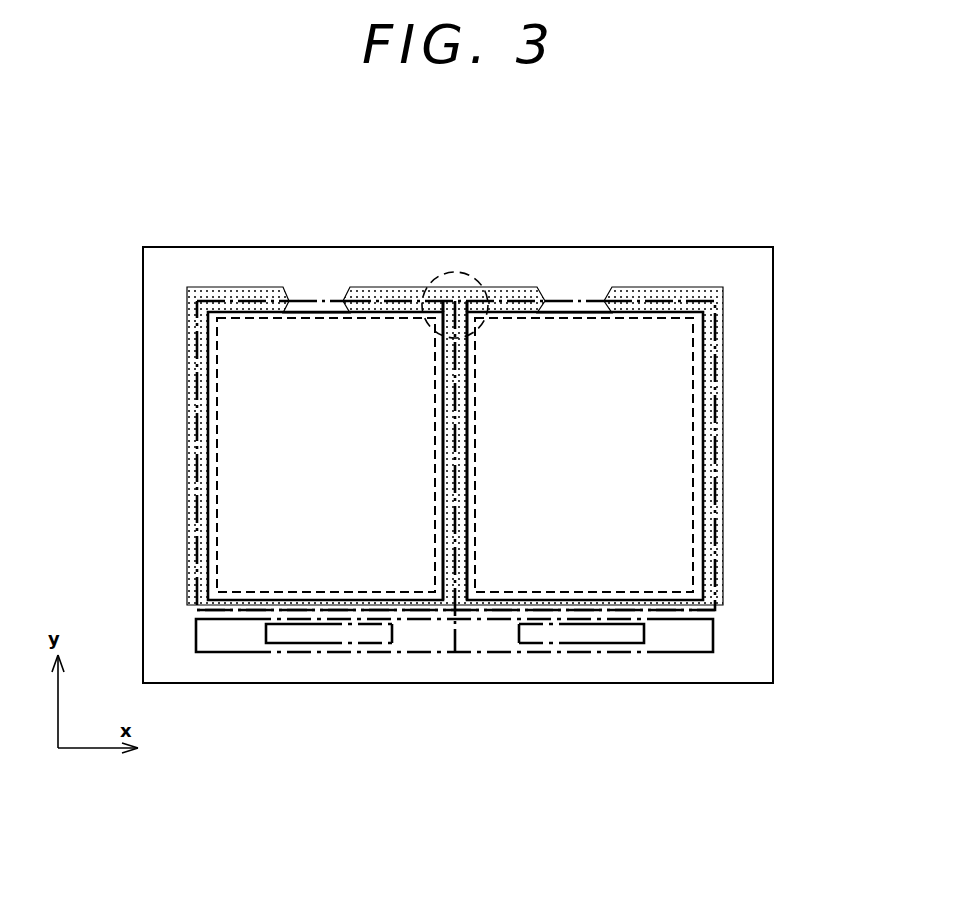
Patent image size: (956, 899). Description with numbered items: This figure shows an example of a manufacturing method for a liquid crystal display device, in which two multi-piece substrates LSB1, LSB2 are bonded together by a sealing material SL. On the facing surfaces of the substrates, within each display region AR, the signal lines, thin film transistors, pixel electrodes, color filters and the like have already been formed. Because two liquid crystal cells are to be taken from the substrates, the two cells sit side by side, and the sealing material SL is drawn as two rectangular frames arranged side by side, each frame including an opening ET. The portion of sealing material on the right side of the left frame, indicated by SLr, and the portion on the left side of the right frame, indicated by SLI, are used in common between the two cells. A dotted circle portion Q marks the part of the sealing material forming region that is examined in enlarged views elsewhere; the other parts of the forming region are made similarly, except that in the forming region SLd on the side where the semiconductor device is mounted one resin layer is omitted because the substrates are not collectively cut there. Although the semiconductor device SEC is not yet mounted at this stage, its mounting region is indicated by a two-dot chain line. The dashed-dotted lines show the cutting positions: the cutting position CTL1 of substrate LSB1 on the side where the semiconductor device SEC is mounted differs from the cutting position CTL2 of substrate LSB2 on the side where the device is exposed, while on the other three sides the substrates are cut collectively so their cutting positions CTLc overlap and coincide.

The multi-piece substrate LSB1 is at (718, 247).
The multi-piece substrate LSB2 is at (467, 417).
The cutting position CTLc is at (223, 300).
The sealing material SL is at (388, 288).
The opening ET is at (318, 293).
The dotted circle portion Q is at (461, 296).
The sealing material SLr is at (441, 436).
The sealing material SLI is at (468, 478).
The sealing material forming region SLd is at (283, 602).
The display region AR is at (455, 455).
The cutting position CTL1 is at (222, 652).
The cutting position CTL2 is at (417, 619).
The semiconductor device SEC is at (318, 645).